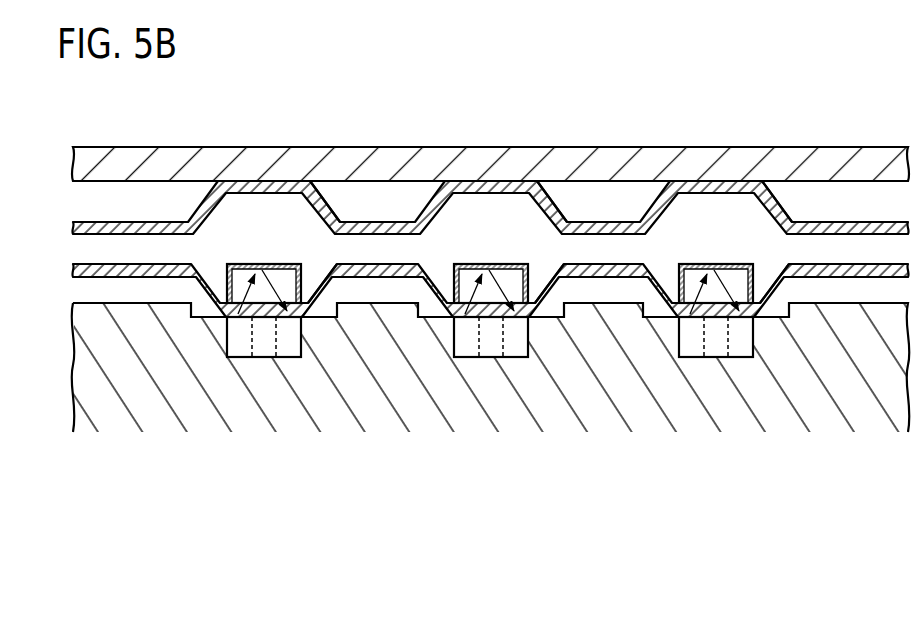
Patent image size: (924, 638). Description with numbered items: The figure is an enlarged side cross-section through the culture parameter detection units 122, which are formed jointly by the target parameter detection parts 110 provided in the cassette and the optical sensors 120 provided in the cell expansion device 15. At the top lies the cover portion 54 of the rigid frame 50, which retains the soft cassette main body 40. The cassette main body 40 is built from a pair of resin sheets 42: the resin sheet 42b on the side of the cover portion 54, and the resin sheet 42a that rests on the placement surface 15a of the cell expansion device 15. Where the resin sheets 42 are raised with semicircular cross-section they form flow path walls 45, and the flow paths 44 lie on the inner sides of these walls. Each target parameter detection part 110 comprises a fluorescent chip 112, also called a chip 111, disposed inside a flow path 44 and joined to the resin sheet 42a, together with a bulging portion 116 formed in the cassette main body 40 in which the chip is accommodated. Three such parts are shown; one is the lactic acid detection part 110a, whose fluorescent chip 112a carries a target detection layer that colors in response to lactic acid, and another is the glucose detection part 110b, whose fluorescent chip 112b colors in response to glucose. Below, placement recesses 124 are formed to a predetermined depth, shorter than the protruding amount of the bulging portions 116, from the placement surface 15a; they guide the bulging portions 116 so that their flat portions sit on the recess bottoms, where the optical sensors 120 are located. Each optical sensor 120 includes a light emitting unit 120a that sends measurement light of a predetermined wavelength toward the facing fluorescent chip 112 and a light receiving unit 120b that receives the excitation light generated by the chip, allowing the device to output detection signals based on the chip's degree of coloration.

The cell expansion device 15 is at (125, 398).
The placement surface 15a is at (87, 303).
The cassette main body 40 is at (173, 199).
The resin sheets 42 is at (497, 268).
The resin sheet 42a is at (857, 278).
The resin sheet 42b is at (865, 222).
The flow paths 44 is at (132, 250).
The flow path walls 45 is at (100, 222).
The frame 50 is at (490, 139).
The cover portion 54 is at (432, 163).
The target parameter detection parts 110 is at (718, 180).
The lactic acid detection part 110a is at (473, 180).
The glucose detection part 110b is at (279, 180).
The chip 111 is at (495, 194).
The fluorescent chip 112 is at (692, 262).
The fluorescent chip 112a is at (493, 262).
The fluorescent chip 112b is at (234, 261).
The bulging portions 116 is at (306, 190).
The optical sensors 120 is at (508, 419).
The light emitting unit 120a is at (240, 347).
The light receiving unit 120b is at (287, 350).
The culture parameter detection units 122 is at (468, 287).
The placement recesses 124 is at (330, 312).